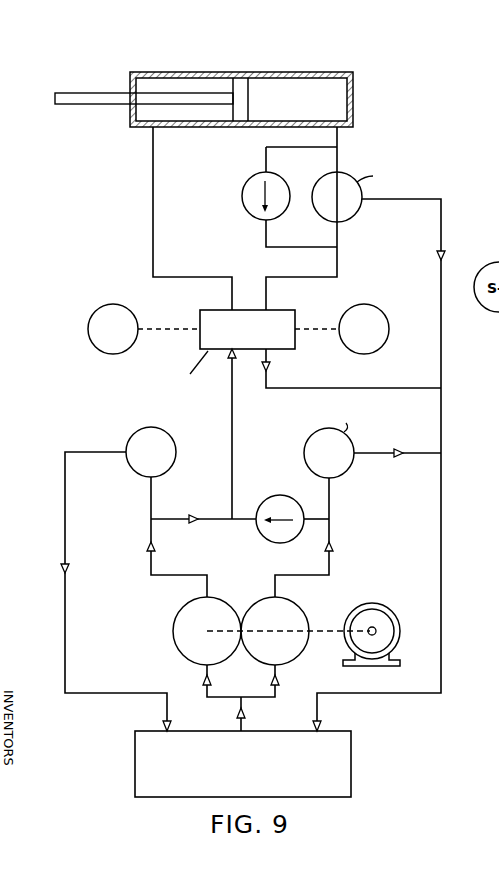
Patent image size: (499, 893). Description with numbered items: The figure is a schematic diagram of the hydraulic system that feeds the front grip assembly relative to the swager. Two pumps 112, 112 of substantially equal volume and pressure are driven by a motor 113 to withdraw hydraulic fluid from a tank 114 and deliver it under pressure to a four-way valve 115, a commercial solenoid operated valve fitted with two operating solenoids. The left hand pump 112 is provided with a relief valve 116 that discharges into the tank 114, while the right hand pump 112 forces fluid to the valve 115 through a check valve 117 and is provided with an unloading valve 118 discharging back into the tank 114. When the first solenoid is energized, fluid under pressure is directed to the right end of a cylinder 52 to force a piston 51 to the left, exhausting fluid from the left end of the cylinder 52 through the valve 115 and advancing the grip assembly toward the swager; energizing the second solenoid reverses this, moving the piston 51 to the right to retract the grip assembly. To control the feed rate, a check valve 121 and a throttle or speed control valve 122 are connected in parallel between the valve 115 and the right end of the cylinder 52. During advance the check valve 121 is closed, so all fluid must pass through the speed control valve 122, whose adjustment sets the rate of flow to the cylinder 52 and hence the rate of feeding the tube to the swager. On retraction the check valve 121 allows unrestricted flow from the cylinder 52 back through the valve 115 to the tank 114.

The piston 51 is at (241, 80).
The cylinder 52 is at (341, 68).
The pumps 112 is at (171, 639).
The motor 113 is at (378, 606).
The tank 114 is at (338, 752).
The 4-way valve 115 is at (285, 310).
The relief valve 116 is at (172, 433).
The check valve 117 is at (276, 494).
The unloading valve 118 is at (346, 476).
The check valve 121 is at (249, 181).
The speed control valve 122 is at (347, 175).